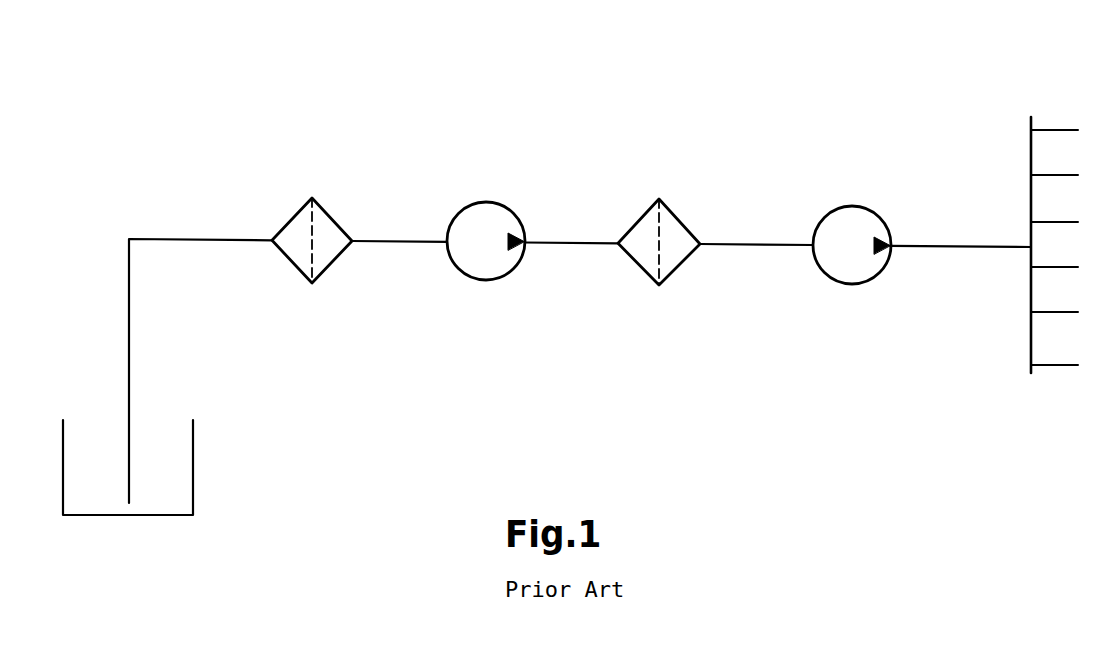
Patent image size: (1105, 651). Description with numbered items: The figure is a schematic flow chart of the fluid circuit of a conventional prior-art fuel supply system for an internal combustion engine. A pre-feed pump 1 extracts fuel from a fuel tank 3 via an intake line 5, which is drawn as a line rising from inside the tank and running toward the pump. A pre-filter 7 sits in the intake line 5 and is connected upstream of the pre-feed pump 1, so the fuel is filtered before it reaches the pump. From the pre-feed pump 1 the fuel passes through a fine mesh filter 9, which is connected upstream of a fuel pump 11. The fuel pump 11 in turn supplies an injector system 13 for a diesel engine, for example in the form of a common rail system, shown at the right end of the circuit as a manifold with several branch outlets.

The pre-feed pump 1 is at (490, 201).
The fuel tank 3 is at (192, 461).
The intake line 5 is at (183, 238).
The pre-filter 7 is at (300, 210).
The fine mesh filter 9 is at (640, 219).
The fuel pump 11 is at (850, 206).
The injector system 13 is at (1031, 167).